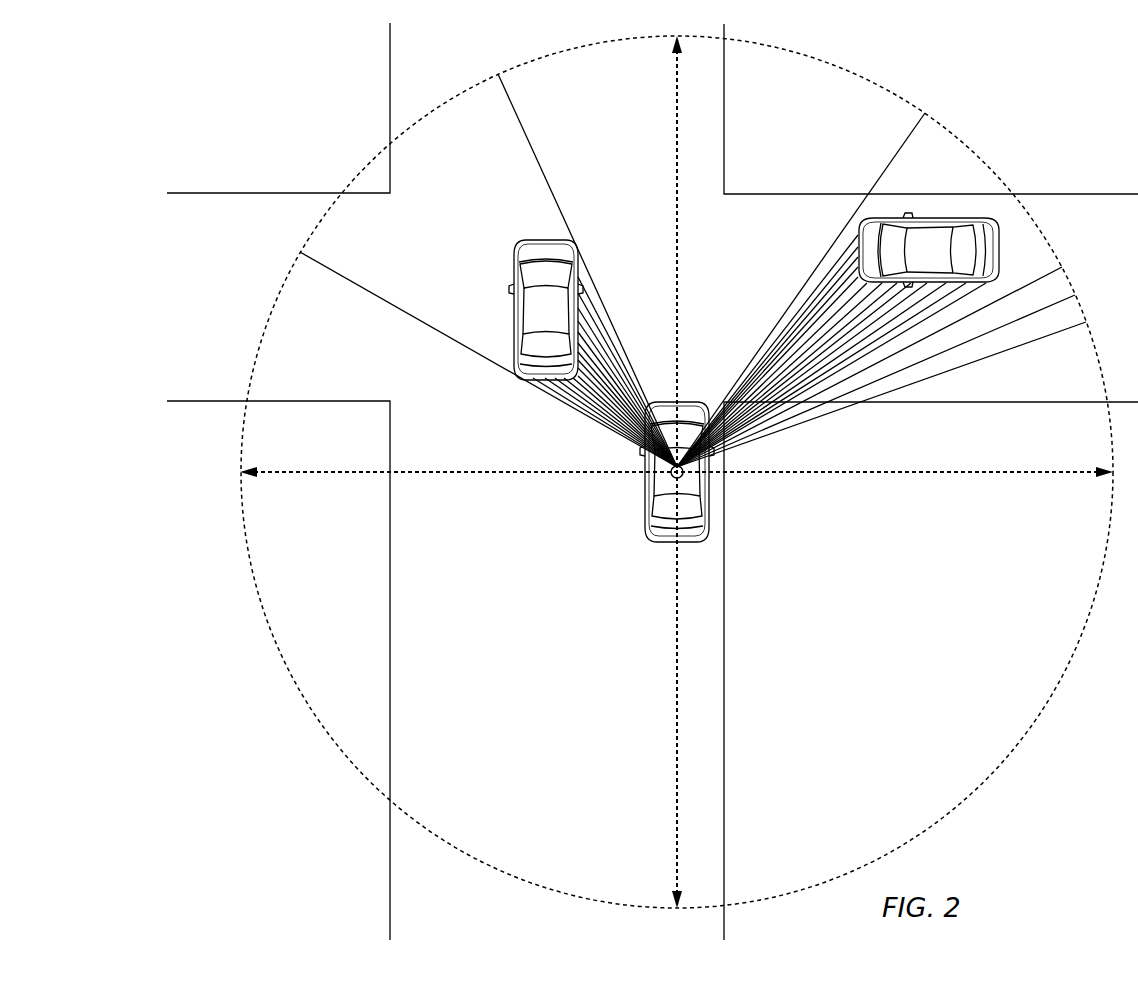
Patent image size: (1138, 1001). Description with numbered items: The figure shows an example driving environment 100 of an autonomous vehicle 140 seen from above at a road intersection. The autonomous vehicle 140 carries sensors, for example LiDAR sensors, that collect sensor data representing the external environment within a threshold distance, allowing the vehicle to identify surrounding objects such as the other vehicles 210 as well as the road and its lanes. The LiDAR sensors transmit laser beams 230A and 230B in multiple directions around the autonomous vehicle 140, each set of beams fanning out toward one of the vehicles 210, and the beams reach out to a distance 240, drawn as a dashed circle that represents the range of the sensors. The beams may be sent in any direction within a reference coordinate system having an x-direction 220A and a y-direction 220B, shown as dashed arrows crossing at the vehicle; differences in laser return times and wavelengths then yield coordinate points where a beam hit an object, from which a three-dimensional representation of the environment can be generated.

The driving environment / system 100 is at (222, 96).
The autonomous vehicle 140 is at (665, 493).
The vehicles 210 is at (538, 318).
The x-direction 220A is at (670, 750).
The y-direction 220B is at (463, 474).
The laser beams 230A is at (488, 270).
The laser beams 230B is at (881, 290).
The distance 240 is at (260, 336).